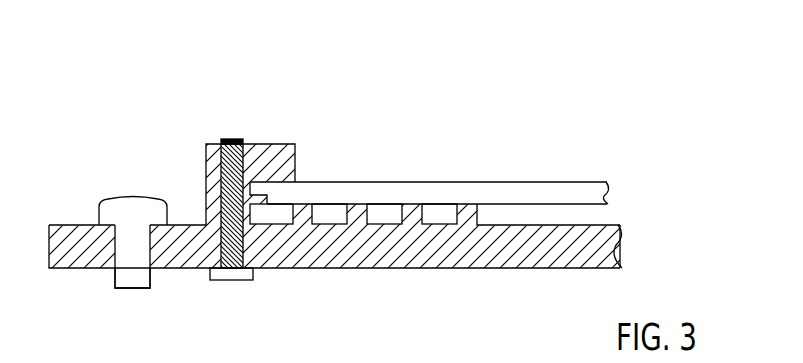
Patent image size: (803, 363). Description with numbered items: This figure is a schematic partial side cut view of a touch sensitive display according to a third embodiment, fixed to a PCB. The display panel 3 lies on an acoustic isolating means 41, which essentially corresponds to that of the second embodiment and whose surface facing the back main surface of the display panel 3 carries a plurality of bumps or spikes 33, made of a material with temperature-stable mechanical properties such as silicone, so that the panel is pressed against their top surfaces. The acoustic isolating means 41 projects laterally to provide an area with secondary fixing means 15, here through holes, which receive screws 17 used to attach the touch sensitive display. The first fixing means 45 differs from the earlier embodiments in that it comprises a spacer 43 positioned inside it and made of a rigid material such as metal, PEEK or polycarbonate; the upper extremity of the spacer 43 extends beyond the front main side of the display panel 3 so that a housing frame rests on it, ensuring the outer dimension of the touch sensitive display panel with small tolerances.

The display panel 3 is at (577, 182).
The secondary fixing means 15 is at (113, 269).
The screws 17 is at (118, 198).
The bumps or spikes 33 is at (358, 203).
The acoustic isolating means 41 is at (285, 268).
The spacer 43 is at (226, 139).
The first fixing means 45 is at (270, 148).